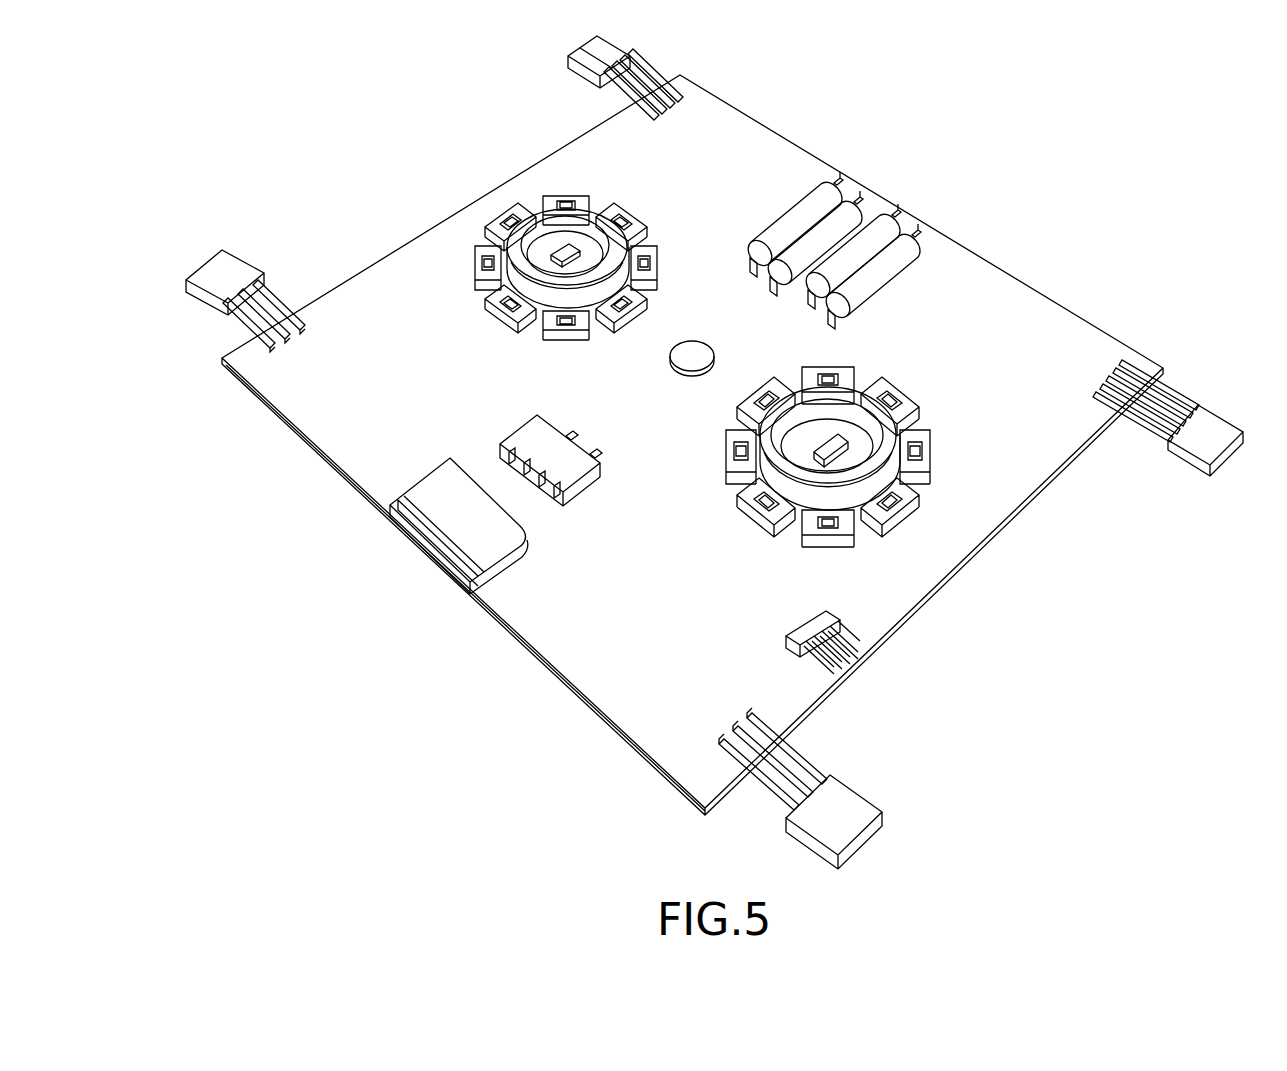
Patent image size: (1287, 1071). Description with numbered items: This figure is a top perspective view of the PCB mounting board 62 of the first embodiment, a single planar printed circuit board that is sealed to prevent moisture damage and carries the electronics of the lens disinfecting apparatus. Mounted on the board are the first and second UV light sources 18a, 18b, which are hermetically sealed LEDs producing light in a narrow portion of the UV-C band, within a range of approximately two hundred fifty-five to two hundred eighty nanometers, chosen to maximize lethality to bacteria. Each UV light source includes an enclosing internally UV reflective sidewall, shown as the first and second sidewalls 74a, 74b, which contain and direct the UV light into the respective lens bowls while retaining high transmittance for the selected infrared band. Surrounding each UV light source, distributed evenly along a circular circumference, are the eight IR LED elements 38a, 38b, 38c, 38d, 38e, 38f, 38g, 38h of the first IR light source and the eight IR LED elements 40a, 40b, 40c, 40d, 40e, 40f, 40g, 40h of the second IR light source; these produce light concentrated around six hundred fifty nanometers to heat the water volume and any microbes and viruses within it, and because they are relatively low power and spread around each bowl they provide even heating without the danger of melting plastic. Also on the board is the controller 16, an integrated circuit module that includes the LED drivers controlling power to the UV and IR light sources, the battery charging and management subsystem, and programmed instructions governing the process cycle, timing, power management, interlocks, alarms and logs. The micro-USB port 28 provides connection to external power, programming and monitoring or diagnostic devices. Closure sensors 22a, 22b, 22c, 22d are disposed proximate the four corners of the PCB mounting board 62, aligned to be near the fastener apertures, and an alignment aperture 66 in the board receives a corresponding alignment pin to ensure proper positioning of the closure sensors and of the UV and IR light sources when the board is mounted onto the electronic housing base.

The PCB mounting board 62 is at (210, 430).
The first UV light source 18a is at (846, 447).
The second UV light source 18b is at (558, 245).
The first enclosing internally UV reflective sidewall 74a is at (848, 418).
The second enclosing internally UV reflective sidewall 74b is at (585, 226).
The IR LED element 38a is at (910, 520).
The IR LED element 38b is at (924, 448).
The IR LED element 38c is at (890, 386).
The IR LED element 38d is at (822, 370).
The IR LED element 38e is at (760, 392).
The IR LED element 38f is at (736, 452).
The IR LED element 38g is at (758, 512).
The IR LED element 38h is at (836, 548).
The IR LED element 40a is at (622, 330).
The IR LED element 40b is at (658, 262).
The IR LED element 40c is at (625, 214).
The IR LED element 40d is at (570, 198).
The IR LED element 40e is at (508, 220).
The IR LED element 40f is at (482, 258).
The IR LED element 40g is at (500, 322).
The IR LED element 40h is at (558, 340).
The controller 16 is at (548, 442).
The micro-USB port 28 is at (438, 502).
The alignment aperture 66 is at (698, 338).
The closure sensor 22a is at (1215, 430).
The closure sensor 22b is at (845, 805).
The closure sensor 22c is at (218, 270).
The closure sensor 22d is at (575, 58).